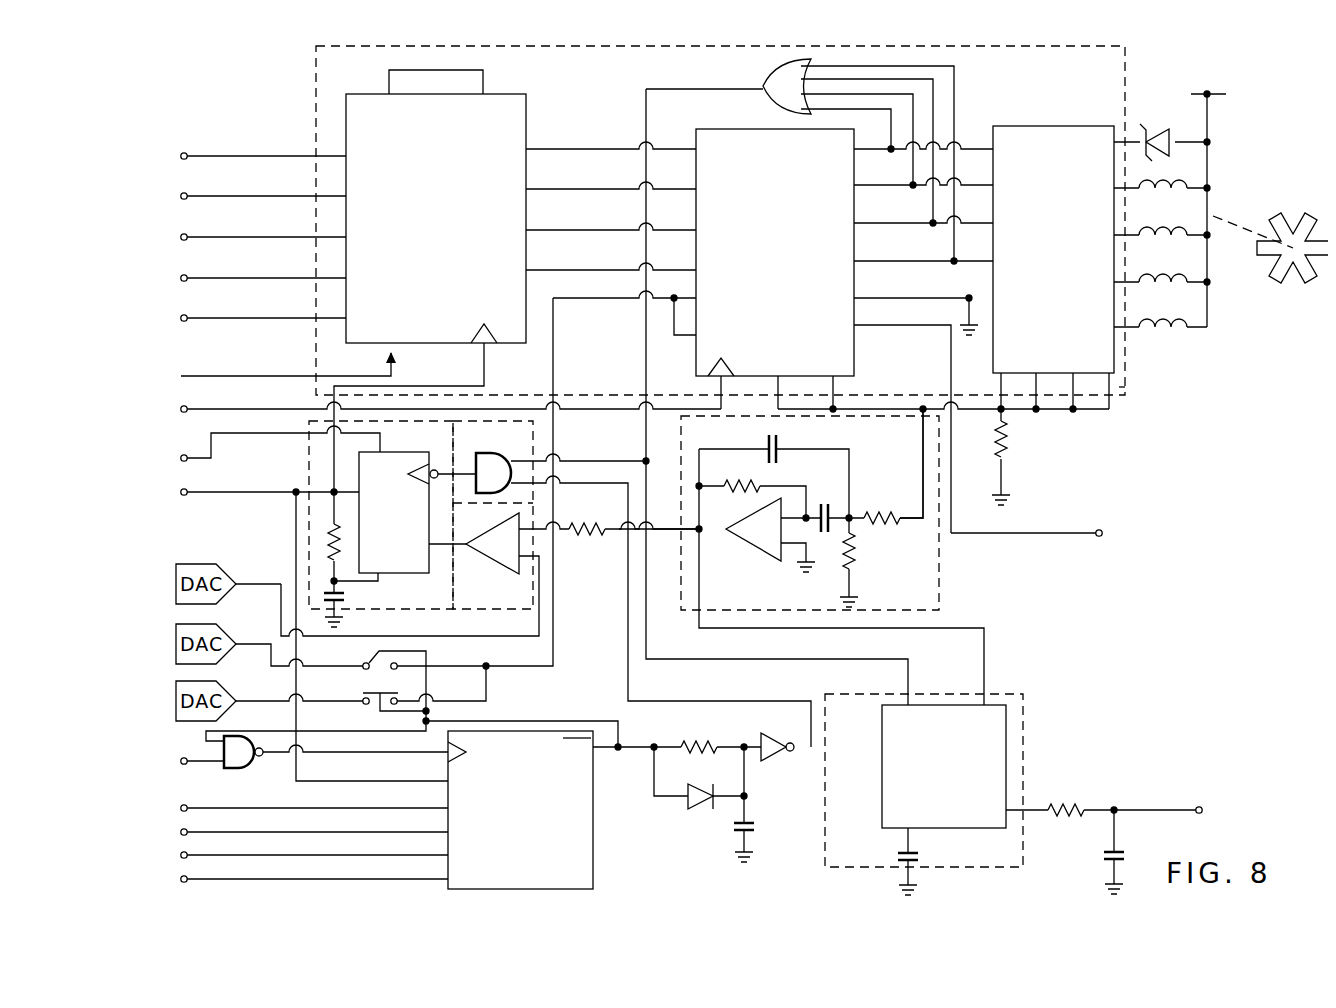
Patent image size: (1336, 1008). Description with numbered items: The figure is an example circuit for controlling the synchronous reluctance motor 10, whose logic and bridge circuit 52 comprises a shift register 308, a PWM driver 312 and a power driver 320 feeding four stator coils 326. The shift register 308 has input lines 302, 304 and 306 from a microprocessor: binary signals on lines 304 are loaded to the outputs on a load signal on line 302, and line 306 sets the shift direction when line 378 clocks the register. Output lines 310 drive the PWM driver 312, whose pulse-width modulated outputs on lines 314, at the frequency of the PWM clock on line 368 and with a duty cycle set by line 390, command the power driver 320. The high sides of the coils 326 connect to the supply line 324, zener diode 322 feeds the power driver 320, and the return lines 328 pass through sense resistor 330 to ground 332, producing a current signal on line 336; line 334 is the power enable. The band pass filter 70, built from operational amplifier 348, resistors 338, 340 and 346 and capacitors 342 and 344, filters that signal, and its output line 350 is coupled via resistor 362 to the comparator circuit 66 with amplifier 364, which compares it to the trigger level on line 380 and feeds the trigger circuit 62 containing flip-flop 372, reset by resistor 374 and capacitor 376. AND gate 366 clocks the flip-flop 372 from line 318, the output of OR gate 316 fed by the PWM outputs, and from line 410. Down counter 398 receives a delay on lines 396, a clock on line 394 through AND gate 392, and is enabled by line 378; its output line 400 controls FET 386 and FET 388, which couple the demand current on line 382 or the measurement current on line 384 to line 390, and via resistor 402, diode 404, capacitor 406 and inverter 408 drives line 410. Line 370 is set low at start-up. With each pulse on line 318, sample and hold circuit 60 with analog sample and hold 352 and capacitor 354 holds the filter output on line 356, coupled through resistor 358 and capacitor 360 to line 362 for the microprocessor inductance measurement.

The synchronous reluctance motor 10 is at (1227, 178).
The logic and bridge circuit 52 is at (1130, 105).
The sample and hold circuit 60 is at (1027, 708).
The trigger circuit 62 is at (387, 608).
The comparator circuit 66 is at (490, 608).
The band pass filter 70 is at (938, 600).
The load signal line 302 is at (275, 153).
The binary input lines 304 is at (176, 330).
The direction line 306 is at (310, 373).
The shift register 308 is at (507, 95).
The shift register output lines 310 is at (555, 138).
The PWM driver 312 is at (732, 137).
The PWM output lines 314 is at (977, 140).
The OR gate 316 is at (773, 63).
The OR gate output line 318 is at (678, 87).
The power driver 320 is at (1073, 127).
The zener diode 322 is at (1162, 130).
The fixed voltage supply line 324 is at (1220, 97).
The stator coils 326 is at (1185, 342).
The power driver current lines 328 is at (1122, 386).
The sense resistor 330 is at (1010, 440).
The ground 332 is at (1002, 490).
The power enable line 334 is at (1045, 535).
The current signal line 336 is at (918, 520).
The resistor 338 is at (877, 523).
The resistor 340 is at (852, 570).
The capacitor 342 is at (765, 440).
The capacitor 344 is at (832, 512).
The resistor 346 is at (760, 483).
The operational amplifier 348 is at (752, 540).
The band pass filter output line 350 is at (666, 535).
The analog sample and hold 352 is at (883, 767).
The hold capacitor 354 is at (900, 848).
The sample and hold output line 356 is at (1032, 810).
The resistor 358 is at (1058, 800).
The capacitor 360 is at (1118, 847).
The resistor / inductance measurement line 362 is at (583, 523).
The amplifier 364 is at (485, 555).
The AND gate 366 is at (477, 455).
The PWM clock line 368 is at (258, 410).
The line 370 is at (237, 438).
The flip-flop 372 is at (397, 457).
The resistor 374 is at (330, 530).
The capacitor 376 is at (347, 590).
The flip-flop Q output line 378 is at (317, 488).
The trigger level line 380 is at (250, 580).
The demand current line 382 is at (262, 640).
The current limit line 384 is at (252, 700).
The FET 386 is at (368, 660).
The FET 388 is at (370, 693).
The duty cycle input line 390 is at (523, 667).
The AND gate 392 is at (232, 767).
The clock line 394 is at (176, 755).
The delay input lines 396 is at (213, 800).
The down counter 398 is at (590, 850).
The down counter output line 400 is at (603, 750).
The resistor 402 is at (703, 742).
The diode 404 is at (703, 802).
The capacitor 406 is at (752, 843).
The inverter 408 is at (770, 750).
The inverter output line 410 is at (772, 698).